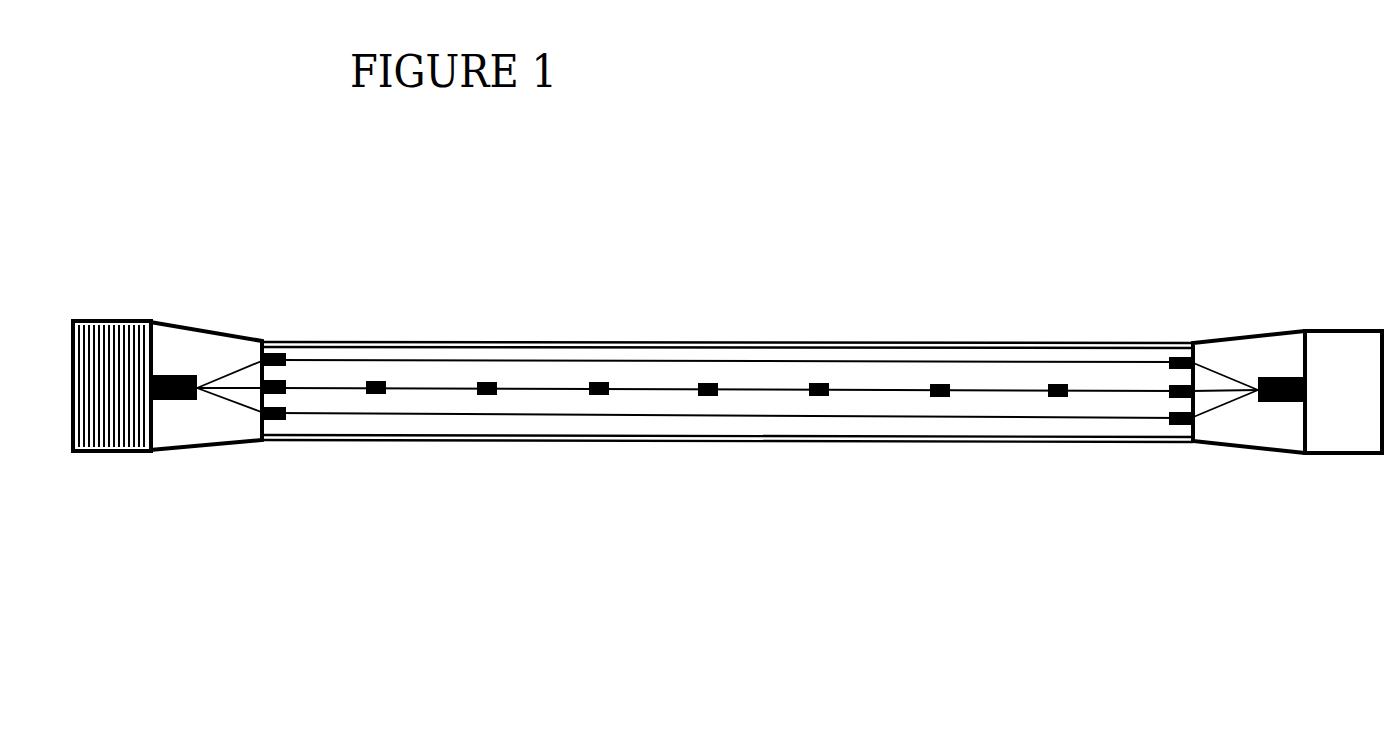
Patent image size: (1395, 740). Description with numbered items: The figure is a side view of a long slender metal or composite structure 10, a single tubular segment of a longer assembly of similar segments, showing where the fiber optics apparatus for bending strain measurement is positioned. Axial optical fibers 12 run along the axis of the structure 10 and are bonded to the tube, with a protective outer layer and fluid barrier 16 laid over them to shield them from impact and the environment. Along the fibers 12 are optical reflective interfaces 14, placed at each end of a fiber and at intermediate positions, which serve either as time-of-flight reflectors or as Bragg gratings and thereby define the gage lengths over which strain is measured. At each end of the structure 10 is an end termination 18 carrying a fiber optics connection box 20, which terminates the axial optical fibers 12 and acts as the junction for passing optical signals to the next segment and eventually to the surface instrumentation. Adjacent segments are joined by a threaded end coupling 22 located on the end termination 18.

The long slender metal or composite structure 10 is at (727, 431).
The axial optical fibers 12 is at (727, 328).
The optical reflective interfaces 14 is at (727, 332).
The protective outer layer and fluid barrier 16 is at (727, 486).
The end termination 18 is at (257, 344).
The fiber optics connection box 20 is at (1282, 342).
The threaded end coupling 22 is at (182, 474).